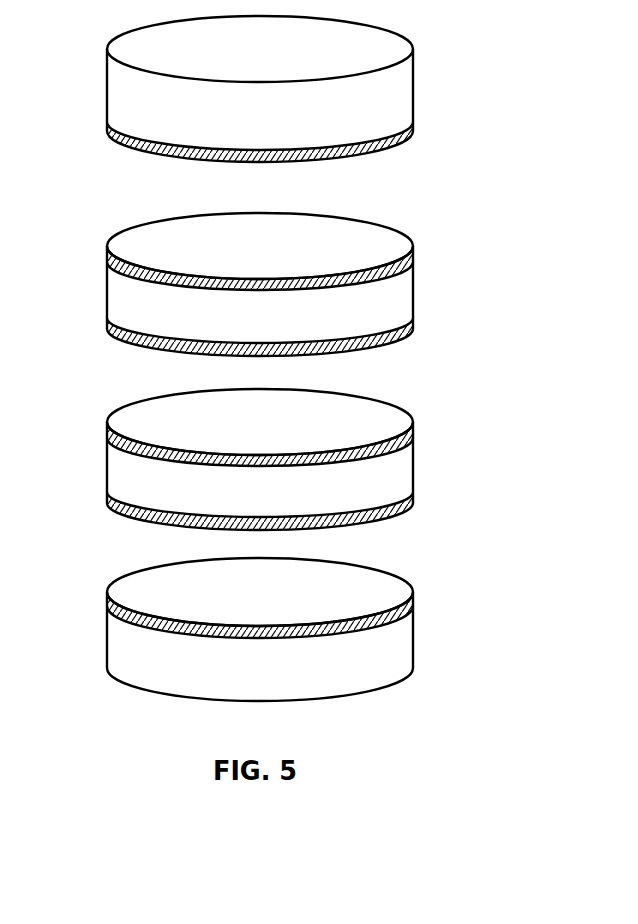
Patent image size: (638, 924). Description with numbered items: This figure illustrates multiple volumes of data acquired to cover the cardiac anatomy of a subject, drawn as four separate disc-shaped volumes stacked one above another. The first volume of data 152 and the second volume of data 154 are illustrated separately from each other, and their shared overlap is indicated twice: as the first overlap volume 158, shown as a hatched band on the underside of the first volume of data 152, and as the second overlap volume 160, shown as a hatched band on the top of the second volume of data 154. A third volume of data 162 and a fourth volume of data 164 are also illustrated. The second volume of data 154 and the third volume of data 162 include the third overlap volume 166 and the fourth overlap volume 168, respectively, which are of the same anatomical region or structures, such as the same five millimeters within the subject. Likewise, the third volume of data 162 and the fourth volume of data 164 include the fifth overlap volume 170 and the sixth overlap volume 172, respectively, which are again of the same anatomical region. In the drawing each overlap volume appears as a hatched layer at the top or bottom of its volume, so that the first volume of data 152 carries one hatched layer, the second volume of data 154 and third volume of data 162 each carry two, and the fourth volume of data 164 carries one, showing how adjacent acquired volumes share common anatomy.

The first volume of data 152 is at (413, 78).
The first overlap volume 158 is at (413, 130).
The second overlap volume 160 is at (413, 258).
The second volume of data 154 is at (413, 295).
The third overlap volume 166 is at (413, 322).
The fourth overlap volume 168 is at (413, 427).
The third volume of data 162 is at (413, 460).
The fifth overlap volume 170 is at (413, 492).
The sixth overlap volume 172 is at (413, 602).
The fourth volume of data 164 is at (413, 645).